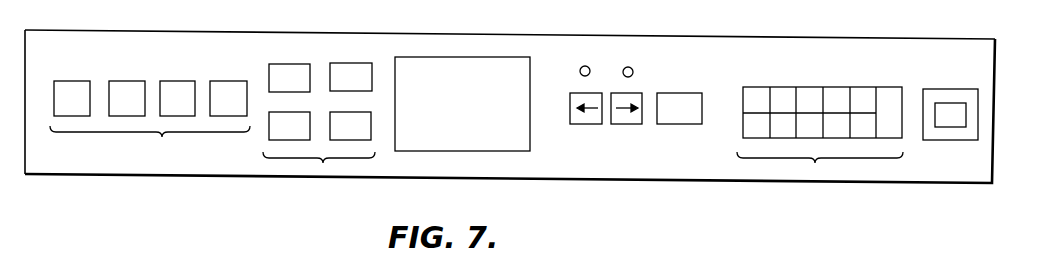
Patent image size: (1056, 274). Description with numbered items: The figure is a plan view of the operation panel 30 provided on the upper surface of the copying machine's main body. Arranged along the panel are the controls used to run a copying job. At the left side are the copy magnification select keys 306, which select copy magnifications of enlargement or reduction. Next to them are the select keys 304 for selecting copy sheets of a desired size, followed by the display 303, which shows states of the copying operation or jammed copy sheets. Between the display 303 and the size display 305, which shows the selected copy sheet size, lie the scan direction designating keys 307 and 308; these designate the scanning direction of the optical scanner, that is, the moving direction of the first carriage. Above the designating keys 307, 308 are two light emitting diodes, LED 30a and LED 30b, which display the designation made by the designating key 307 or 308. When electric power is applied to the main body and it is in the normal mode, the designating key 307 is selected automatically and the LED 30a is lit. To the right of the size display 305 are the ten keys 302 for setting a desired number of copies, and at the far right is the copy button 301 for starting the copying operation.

The operation panel 30 is at (719, 34).
The LED 30a is at (582, 66).
The LED 30b is at (627, 67).
The copy button 301 is at (960, 89).
The ten keys 302 is at (815, 163).
The display 303 is at (454, 151).
The select keys 304 is at (323, 163).
The size display 305 is at (677, 125).
The copy magnification select keys 306 is at (162, 137).
The scan direction designating key 307 is at (585, 125).
The scan direction designating key 308 is at (625, 125).